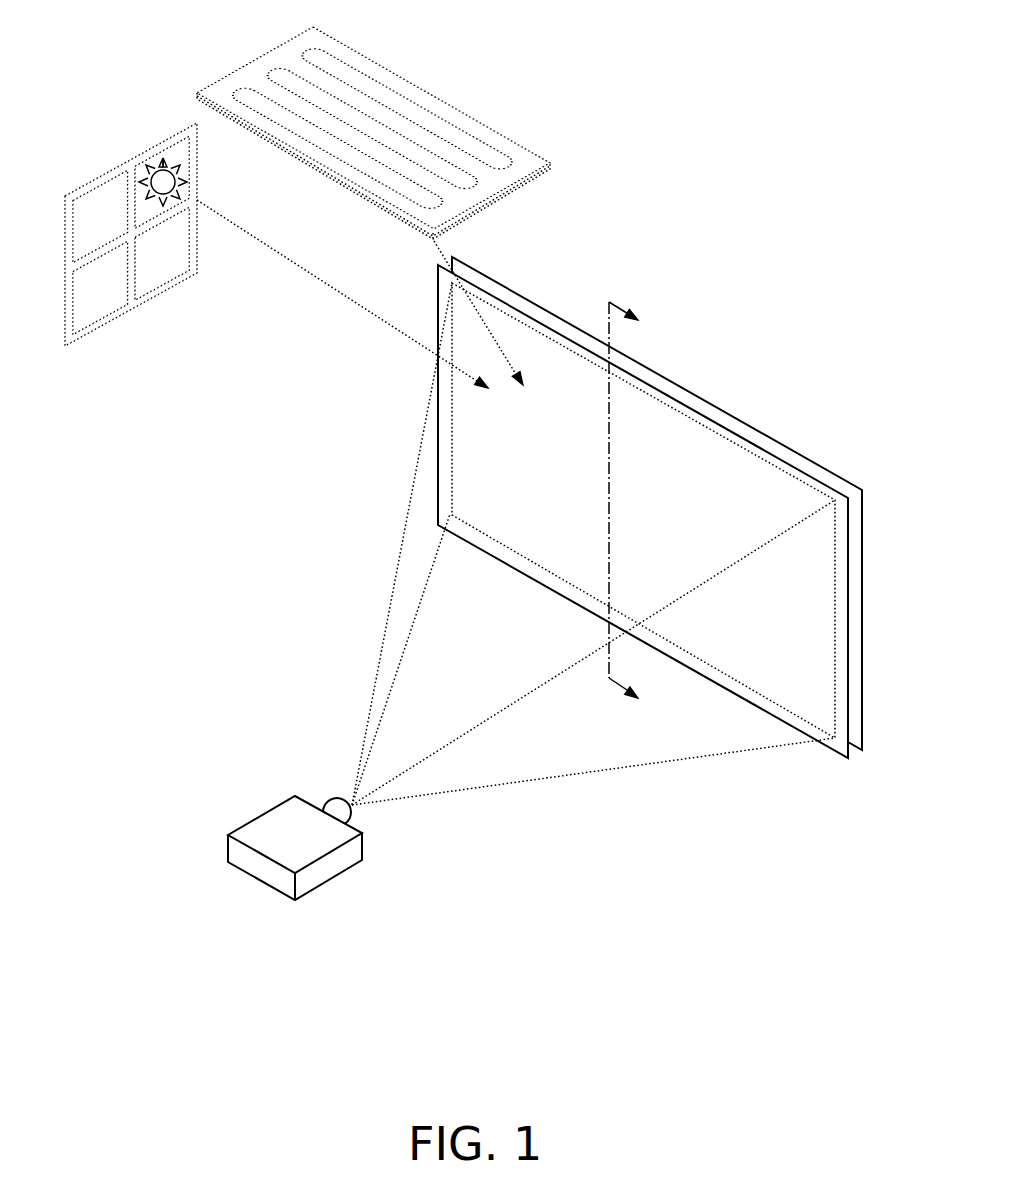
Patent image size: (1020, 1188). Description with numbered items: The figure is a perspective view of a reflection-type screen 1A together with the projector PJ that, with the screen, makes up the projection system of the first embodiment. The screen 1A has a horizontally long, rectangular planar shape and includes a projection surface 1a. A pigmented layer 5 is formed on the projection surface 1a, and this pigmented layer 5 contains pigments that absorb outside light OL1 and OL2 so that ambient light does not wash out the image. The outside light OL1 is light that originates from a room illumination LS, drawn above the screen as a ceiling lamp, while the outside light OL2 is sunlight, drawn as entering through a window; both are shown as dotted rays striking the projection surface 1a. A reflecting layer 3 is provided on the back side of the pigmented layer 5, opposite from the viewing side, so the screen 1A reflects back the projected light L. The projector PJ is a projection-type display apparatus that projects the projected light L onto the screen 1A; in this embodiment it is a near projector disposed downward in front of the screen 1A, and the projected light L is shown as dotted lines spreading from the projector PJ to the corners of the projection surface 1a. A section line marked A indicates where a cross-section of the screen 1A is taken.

The screen 1A is at (681, 507).
The reflecting layer 3 is at (790, 452).
The pigmented layer 5 is at (850, 550).
The projection surface 1a is at (822, 680).
The room illumination LS is at (428, 92).
The outside light OL1 is at (432, 252).
The outside light OL2 is at (315, 278).
The projector PJ is at (332, 867).
The projected light L is at (592, 776).
The section line A- A is at (619, 496).